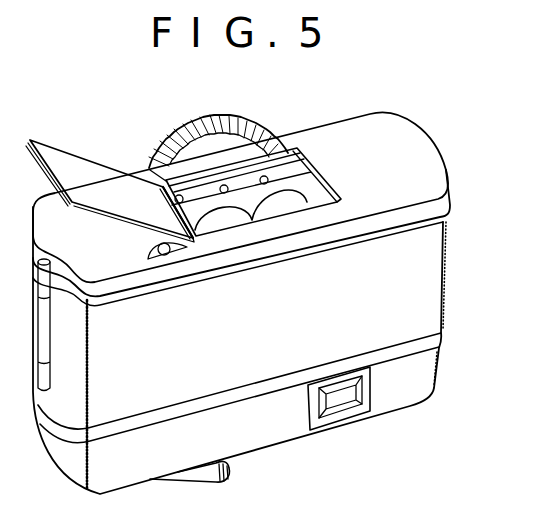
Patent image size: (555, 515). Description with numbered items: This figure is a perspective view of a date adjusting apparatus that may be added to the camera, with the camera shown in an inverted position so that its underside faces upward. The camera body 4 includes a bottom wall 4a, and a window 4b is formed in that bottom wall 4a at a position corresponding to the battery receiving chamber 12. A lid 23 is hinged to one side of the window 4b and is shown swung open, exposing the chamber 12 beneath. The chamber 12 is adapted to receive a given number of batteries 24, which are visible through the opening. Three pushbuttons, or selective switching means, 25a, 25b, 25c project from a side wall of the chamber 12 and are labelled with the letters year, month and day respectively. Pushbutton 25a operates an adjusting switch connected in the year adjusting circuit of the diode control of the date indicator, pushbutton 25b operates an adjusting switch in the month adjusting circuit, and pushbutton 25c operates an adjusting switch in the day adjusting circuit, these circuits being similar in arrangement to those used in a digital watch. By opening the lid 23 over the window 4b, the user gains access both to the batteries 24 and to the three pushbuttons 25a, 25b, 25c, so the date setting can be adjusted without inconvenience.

The camera body 4 is at (450, 292).
The bottom wall 4a is at (412, 153).
The window 4b is at (332, 189).
The battery receiving chamber 12 is at (307, 193).
The lid 23 is at (77, 170).
The batteries 24 is at (277, 207).
The pushbutton 25a is at (163, 184).
The pushbutton 25b is at (222, 185).
The pushbutton 25c is at (266, 177).